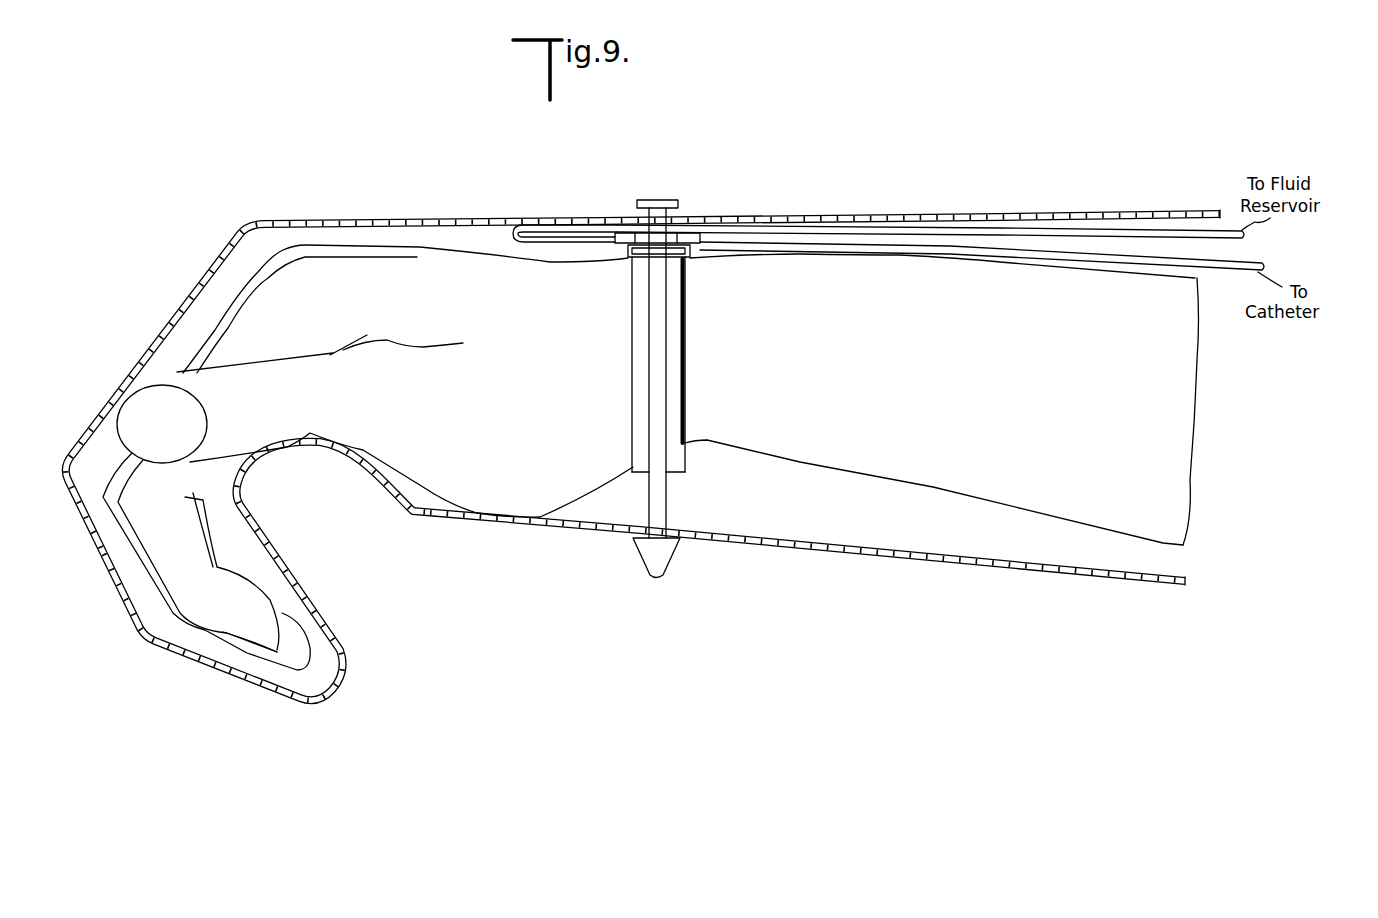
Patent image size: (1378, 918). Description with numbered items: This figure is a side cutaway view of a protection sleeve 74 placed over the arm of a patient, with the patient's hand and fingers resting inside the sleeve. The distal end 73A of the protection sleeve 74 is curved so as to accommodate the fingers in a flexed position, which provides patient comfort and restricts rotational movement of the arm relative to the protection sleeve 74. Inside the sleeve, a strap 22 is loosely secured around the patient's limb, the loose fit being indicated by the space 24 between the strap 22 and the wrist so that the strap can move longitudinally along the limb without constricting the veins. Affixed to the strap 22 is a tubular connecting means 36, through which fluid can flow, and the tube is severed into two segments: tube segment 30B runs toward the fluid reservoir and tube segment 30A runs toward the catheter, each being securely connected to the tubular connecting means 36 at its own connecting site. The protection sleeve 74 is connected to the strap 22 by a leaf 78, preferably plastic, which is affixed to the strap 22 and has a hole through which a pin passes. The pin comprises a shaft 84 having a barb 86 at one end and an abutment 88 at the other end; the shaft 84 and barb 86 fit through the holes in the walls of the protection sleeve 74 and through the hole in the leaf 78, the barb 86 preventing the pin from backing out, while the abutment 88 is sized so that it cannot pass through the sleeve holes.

The strap 22 is at (688, 339).
The space 24 is at (686, 463).
The tube segment 30A is at (1026, 254).
The tube segment 30B is at (575, 243).
The tubular connecting means 36 is at (615, 233).
The distal end 73A is at (333, 687).
The protection sleeve 74 is at (504, 218).
The leaf 78 is at (688, 257).
The shaft 84 is at (668, 501).
The barb 86 is at (667, 566).
The abutment 88 is at (652, 200).